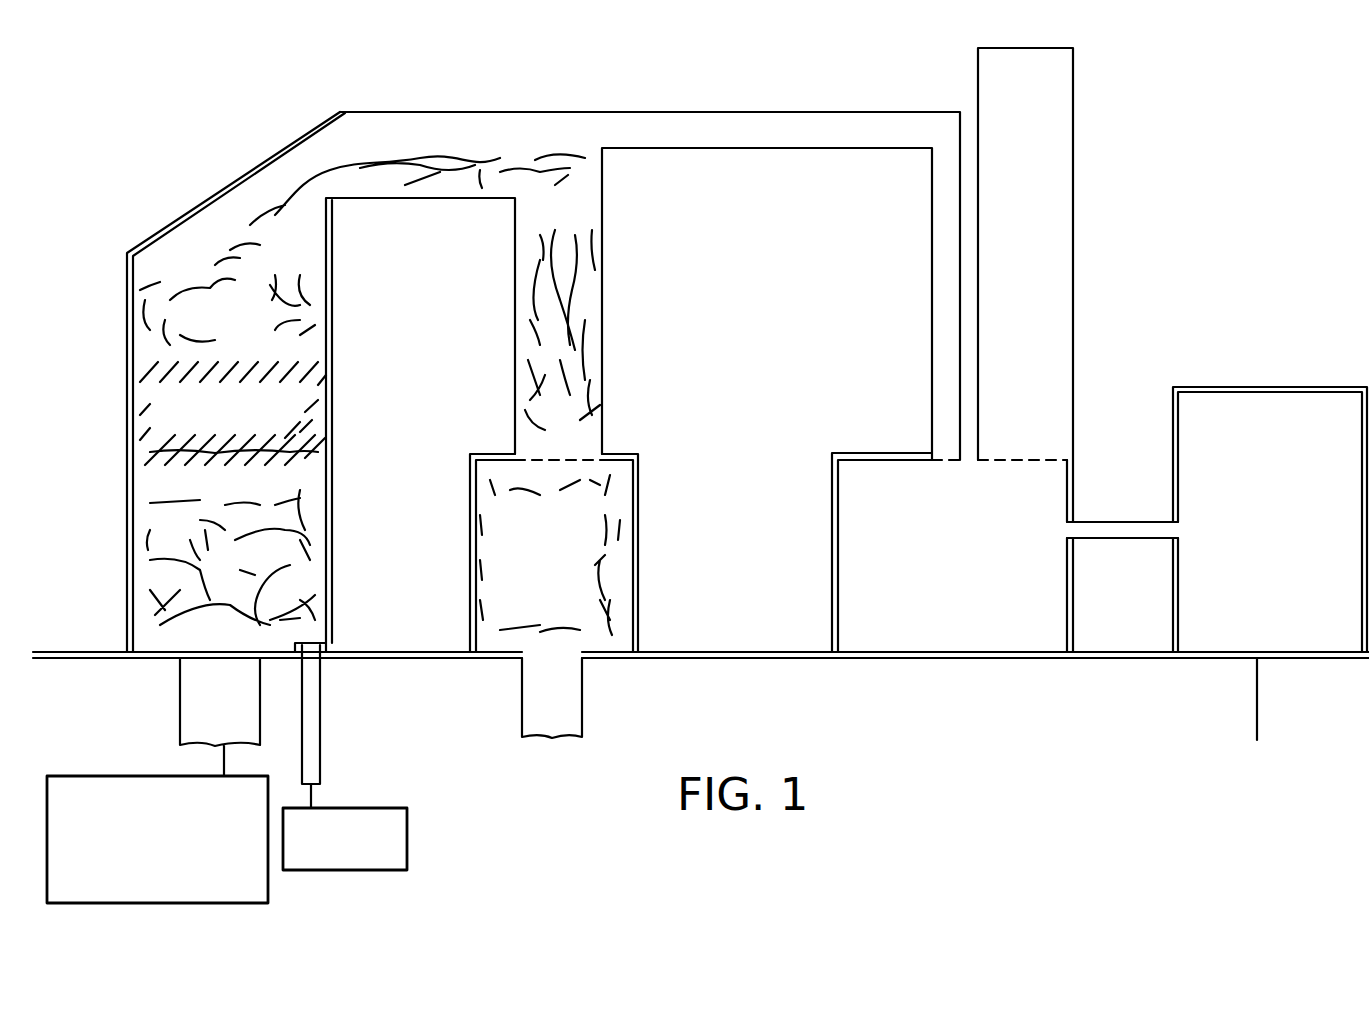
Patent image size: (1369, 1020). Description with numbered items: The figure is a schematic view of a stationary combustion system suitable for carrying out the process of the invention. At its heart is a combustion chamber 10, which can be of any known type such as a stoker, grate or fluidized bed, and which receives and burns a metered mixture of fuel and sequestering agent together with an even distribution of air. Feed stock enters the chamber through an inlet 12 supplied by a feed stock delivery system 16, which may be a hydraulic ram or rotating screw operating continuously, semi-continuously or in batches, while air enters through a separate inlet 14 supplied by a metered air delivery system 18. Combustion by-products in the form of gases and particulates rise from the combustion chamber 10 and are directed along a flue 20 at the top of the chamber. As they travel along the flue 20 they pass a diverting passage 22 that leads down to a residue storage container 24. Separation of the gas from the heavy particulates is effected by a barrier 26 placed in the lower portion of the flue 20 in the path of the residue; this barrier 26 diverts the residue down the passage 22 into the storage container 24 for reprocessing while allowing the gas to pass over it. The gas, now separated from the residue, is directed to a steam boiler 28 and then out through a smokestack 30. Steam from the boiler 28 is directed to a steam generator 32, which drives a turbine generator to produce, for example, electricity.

The combustion chamber 10 is at (305, 422).
The feed stock inlet 12 is at (180, 703).
The air inlet 14 is at (315, 712).
The feed stock delivery system 16 is at (117, 775).
The metered air delivery system 18 is at (407, 830).
The flue 20 is at (440, 123).
The diverting passage 22 is at (580, 282).
The residue storage container 24 is at (638, 512).
The barrier 26 is at (594, 160).
The steam boiler 28 is at (832, 545).
The smokestack 30 is at (1058, 302).
The steam generator 32 is at (1298, 387).